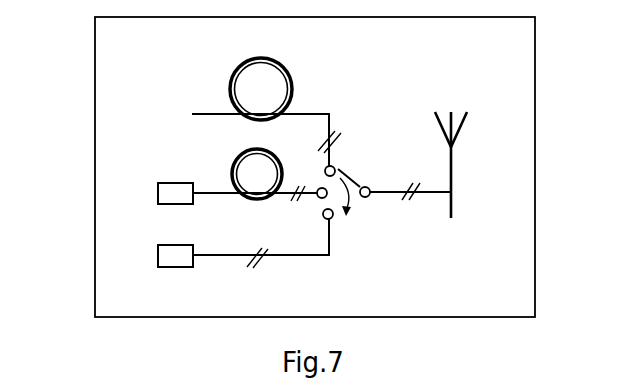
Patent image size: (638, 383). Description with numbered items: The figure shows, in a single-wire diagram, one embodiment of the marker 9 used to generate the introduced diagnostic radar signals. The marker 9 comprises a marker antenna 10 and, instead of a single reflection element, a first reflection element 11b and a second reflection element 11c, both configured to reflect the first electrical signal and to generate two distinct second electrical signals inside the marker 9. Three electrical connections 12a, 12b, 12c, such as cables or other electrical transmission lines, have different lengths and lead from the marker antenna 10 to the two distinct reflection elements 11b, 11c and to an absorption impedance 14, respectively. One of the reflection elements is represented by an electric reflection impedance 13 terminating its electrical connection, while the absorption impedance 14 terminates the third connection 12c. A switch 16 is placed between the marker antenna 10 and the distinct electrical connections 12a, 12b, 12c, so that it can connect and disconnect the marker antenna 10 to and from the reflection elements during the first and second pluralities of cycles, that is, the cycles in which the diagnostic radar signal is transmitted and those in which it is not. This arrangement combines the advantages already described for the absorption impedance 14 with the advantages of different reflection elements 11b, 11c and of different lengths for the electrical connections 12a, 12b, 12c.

The marker 9 is at (95, 281).
The marker antenna 10 is at (452, 208).
The first reflection element 11b is at (187, 98).
The second reflection element 11c is at (167, 162).
The first electrical connection 12a is at (318, 114).
The second electrical connection 12b is at (236, 150).
The third electrical connection 12c is at (330, 243).
The electric reflection impedance 13 is at (158, 193).
The absorption impedance 14 is at (176, 268).
The switch 16 is at (362, 163).